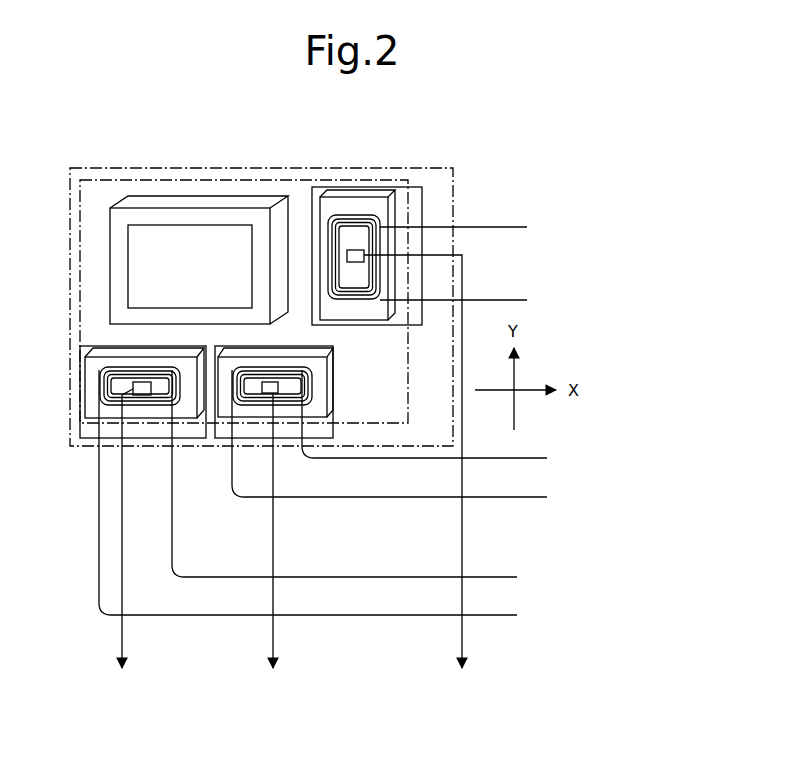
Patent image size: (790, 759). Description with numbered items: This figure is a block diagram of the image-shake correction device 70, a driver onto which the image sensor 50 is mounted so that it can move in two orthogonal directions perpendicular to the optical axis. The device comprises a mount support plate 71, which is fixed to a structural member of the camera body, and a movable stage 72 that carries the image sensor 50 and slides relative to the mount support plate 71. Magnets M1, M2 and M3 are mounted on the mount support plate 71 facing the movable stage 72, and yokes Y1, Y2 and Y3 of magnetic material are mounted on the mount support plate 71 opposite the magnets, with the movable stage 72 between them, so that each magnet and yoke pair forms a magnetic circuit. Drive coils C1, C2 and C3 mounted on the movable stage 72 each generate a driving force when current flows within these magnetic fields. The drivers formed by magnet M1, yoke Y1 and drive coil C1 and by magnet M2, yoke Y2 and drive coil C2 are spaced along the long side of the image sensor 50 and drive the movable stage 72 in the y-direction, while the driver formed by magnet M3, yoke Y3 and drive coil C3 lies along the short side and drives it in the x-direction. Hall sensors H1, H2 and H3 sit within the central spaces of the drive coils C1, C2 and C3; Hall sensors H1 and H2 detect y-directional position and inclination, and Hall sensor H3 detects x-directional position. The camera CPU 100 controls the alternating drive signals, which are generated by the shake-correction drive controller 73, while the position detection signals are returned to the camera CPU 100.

The image-shake correction device 70 is at (296, 150).
The mount support plate 71 is at (144, 167).
The movable stage 72 is at (86, 178).
The image sensor 50 is at (202, 218).
The shake-correction drive controller 73 is at (607, 428).
The camera CPU 100 is at (283, 693).
The magnet M1 is at (98, 352).
The magnet M2 is at (328, 373).
The magnet M3 is at (350, 192).
The drive coil C1 is at (98, 387).
The drive coil C2 is at (313, 393).
The drive coil C3 is at (363, 215).
The yoke Y1 is at (90, 432).
The yoke Y2 is at (292, 433).
The yoke Y3 is at (416, 207).
The Hall sensor H1 is at (143, 398).
The Hall sensor H2 is at (266, 396).
The Hall sensor H3 is at (362, 264).